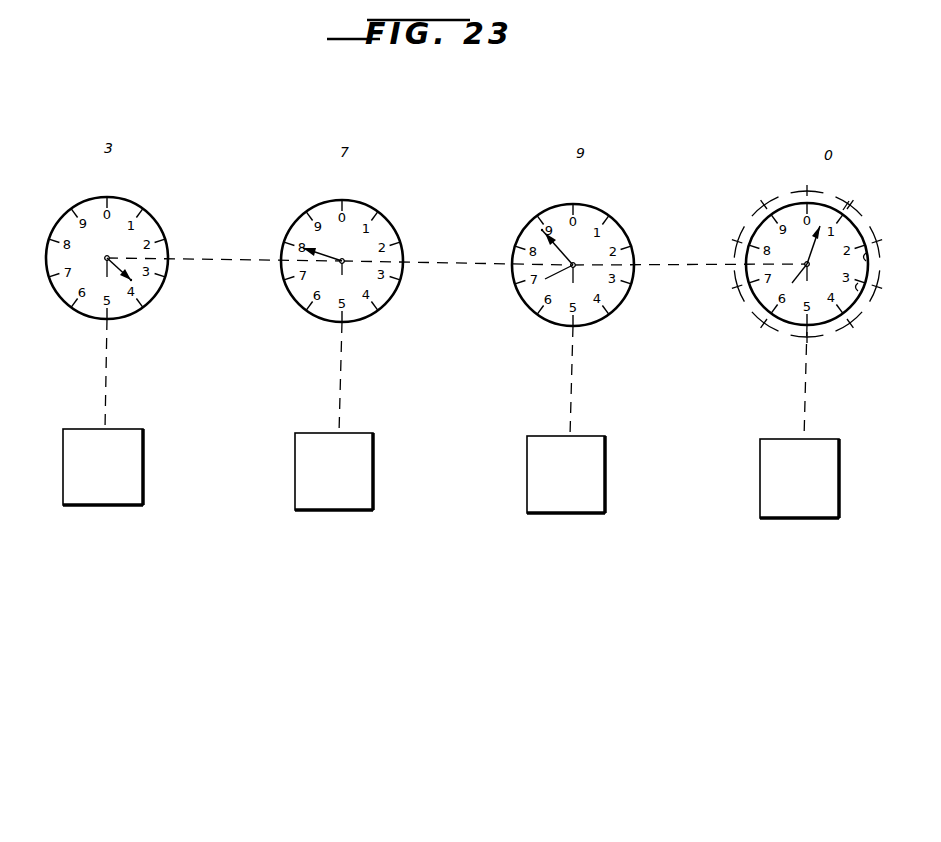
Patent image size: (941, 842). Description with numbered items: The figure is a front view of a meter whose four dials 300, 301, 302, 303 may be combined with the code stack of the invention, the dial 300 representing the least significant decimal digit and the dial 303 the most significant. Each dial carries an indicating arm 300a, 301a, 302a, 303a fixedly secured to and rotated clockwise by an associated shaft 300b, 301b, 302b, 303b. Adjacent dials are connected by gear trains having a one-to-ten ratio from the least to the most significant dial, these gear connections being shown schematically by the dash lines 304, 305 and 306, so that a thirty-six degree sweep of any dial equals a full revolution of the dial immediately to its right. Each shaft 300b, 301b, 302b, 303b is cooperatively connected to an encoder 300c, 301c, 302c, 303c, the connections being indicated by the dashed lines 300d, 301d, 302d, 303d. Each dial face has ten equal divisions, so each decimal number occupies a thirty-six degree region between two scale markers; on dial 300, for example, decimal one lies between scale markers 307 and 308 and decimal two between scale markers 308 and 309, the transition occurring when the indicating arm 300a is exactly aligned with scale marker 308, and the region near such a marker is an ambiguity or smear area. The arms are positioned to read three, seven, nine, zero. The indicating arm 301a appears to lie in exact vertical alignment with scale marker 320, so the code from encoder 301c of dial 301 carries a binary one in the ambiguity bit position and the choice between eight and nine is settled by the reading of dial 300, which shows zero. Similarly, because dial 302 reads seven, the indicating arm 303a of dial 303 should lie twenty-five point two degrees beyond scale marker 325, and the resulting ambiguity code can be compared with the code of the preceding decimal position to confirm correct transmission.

The meter dial 300 is at (886, 226).
The indicating arm 300a is at (817, 239).
The shaft 300b is at (792, 280).
The encoder 300c is at (839, 483).
The dashed line 300d is at (805, 400).
The meter dial 301 is at (630, 224).
The indicating arm 301a is at (550, 281).
The shaft 301b is at (575, 262).
The encoder 301c is at (605, 478).
The dashed line 301d is at (571, 386).
The meter dial 302 is at (395, 222).
The indicating arm 302a is at (336, 262).
The shaft 302b is at (362, 241).
The encoder 302c is at (373, 476).
The dashed line 302d is at (340, 384).
The meter dial 303 is at (160, 215).
The indicating arm 303a is at (109, 277).
The shaft 303b is at (127, 243).
The encoder 303c is at (143, 476).
The dashed line 303d is at (106, 381).
The dash line 304 is at (700, 263).
The dash line 305 is at (464, 266).
The dash line 306 is at (221, 263).
The scale marker 307 is at (846, 204).
The scale marker 308 is at (880, 258).
The scale marker 309 is at (877, 300).
The scale marker 320 is at (531, 226).
The scale marker 325 is at (133, 282).